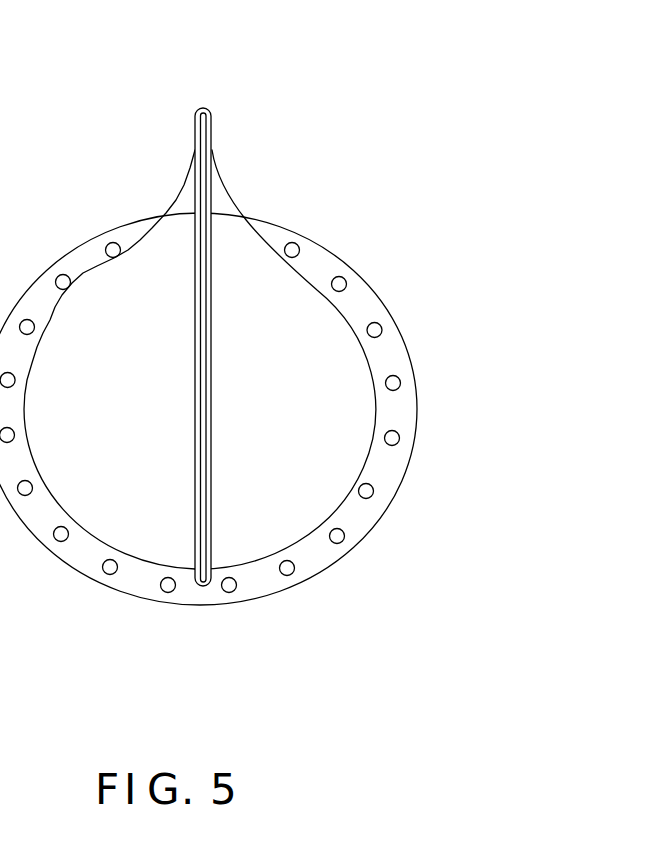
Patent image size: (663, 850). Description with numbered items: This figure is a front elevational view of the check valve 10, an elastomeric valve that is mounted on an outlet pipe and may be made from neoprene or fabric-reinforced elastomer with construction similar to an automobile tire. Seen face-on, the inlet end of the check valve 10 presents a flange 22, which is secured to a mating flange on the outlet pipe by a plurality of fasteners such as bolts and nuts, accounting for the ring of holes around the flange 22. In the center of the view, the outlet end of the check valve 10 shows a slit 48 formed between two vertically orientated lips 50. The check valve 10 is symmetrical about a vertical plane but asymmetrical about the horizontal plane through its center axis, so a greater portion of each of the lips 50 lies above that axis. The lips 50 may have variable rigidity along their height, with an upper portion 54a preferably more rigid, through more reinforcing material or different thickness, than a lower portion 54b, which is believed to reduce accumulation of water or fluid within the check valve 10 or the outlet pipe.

The check valve 10 is at (472, 108).
The flange 22 is at (363, 524).
The slit 48 is at (210, 143).
The lips 50 is at (198, 167).
The upper portion 54a is at (272, 232).
The lower portion 54b is at (194, 485).